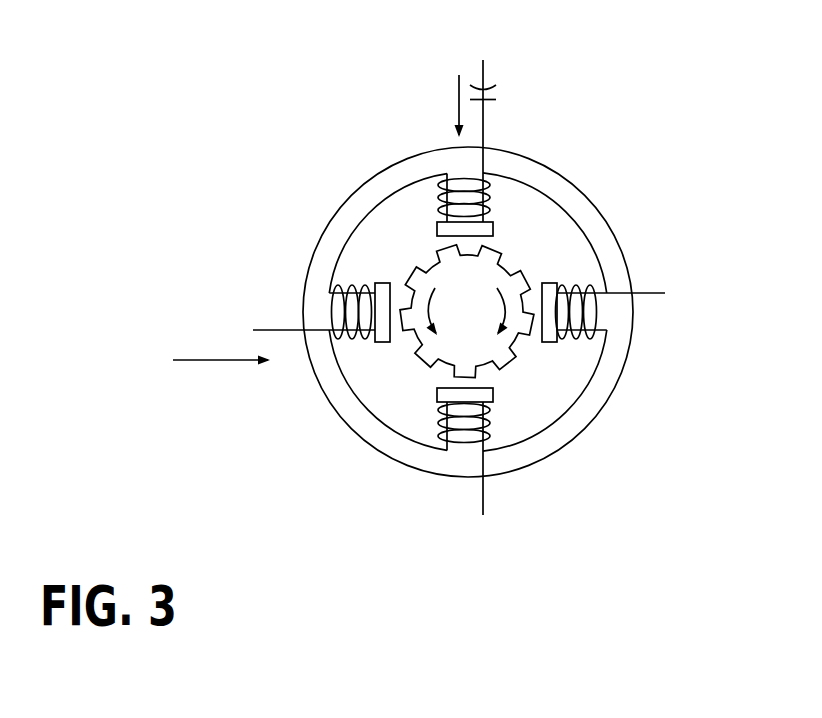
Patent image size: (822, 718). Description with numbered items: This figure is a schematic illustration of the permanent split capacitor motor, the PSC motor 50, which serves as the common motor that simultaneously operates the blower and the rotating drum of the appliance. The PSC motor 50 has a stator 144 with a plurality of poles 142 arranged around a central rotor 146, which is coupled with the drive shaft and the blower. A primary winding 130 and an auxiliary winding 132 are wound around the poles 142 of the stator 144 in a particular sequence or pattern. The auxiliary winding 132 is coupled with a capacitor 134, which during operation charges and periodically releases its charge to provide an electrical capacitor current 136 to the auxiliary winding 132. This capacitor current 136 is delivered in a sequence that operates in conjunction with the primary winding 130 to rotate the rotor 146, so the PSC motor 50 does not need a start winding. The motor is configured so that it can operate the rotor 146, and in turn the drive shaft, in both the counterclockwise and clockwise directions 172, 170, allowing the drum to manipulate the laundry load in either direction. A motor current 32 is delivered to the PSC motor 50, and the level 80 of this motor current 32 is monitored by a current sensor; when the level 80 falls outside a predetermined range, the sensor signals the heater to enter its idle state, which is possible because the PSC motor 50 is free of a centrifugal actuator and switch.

The motor current 32 is at (198, 361).
The PSC motor 50 is at (614, 165).
The current level 80 is at (229, 351).
The primary winding 130 is at (366, 276).
The auxiliary winding 132 is at (500, 211).
The capacitor 134 is at (477, 80).
The capacitor current 136 is at (457, 103).
The poles 142 is at (553, 283).
The stator 144 is at (647, 359).
The rotor 146 is at (500, 343).
The clockwise direction 170 is at (503, 308).
The counterclockwise direction 172 is at (430, 312).